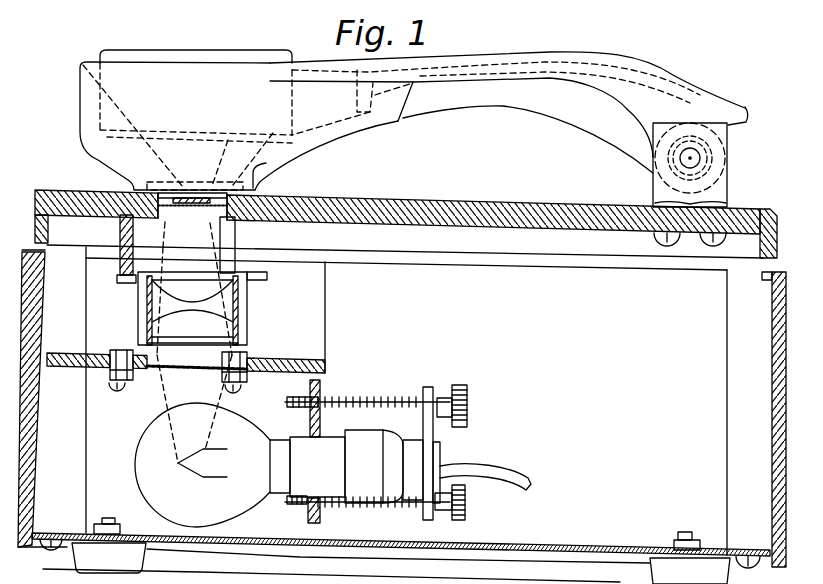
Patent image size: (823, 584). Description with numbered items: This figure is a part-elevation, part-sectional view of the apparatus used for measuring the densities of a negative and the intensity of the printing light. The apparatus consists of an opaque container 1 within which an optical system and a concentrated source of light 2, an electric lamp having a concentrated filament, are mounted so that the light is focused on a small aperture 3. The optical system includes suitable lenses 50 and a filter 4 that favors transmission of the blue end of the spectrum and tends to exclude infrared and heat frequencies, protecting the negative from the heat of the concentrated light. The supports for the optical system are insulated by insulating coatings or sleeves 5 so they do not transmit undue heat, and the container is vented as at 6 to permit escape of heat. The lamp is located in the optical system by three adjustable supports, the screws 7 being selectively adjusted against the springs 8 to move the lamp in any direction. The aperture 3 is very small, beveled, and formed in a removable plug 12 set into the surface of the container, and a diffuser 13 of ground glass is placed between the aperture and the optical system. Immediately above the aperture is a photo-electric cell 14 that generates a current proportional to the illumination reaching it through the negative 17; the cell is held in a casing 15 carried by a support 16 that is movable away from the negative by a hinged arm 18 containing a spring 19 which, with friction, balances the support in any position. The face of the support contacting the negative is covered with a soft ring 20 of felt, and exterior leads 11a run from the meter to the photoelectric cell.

The opaque container 1 is at (495, 204).
The concentrated source of light 2 is at (178, 465).
The small aperture 3 is at (183, 222).
The filter 4 is at (150, 380).
The insulating coatings or sleeves 5 is at (119, 260).
The vent 6 is at (36, 248).
The screws 7 is at (446, 395).
The springs 8 is at (395, 400).
The exterior leads from the meter to the photoelectric cell 11a is at (742, 108).
The plug 12 is at (165, 195).
The diffuser 13 is at (180, 190).
The photo-electric cell 14 is at (84, 72).
The casing 15 is at (118, 50).
The support 16 is at (79, 115).
The negative 17 is at (325, 197).
The hinged arm 18 is at (525, 103).
The spring 19 is at (700, 156).
The soft ring 20 is at (232, 140).
The lenses 50 is at (247, 330).